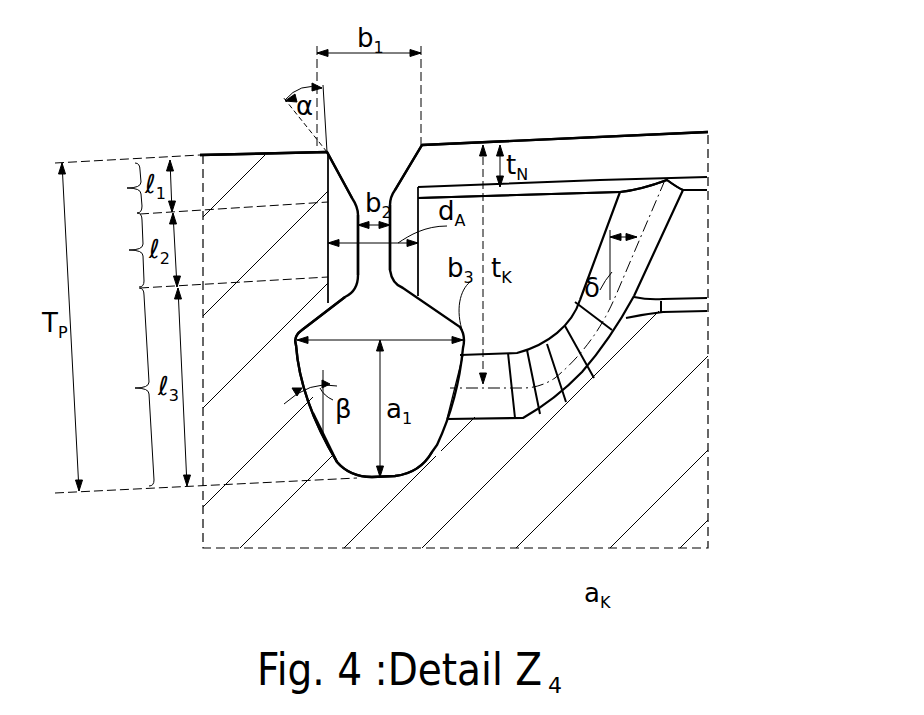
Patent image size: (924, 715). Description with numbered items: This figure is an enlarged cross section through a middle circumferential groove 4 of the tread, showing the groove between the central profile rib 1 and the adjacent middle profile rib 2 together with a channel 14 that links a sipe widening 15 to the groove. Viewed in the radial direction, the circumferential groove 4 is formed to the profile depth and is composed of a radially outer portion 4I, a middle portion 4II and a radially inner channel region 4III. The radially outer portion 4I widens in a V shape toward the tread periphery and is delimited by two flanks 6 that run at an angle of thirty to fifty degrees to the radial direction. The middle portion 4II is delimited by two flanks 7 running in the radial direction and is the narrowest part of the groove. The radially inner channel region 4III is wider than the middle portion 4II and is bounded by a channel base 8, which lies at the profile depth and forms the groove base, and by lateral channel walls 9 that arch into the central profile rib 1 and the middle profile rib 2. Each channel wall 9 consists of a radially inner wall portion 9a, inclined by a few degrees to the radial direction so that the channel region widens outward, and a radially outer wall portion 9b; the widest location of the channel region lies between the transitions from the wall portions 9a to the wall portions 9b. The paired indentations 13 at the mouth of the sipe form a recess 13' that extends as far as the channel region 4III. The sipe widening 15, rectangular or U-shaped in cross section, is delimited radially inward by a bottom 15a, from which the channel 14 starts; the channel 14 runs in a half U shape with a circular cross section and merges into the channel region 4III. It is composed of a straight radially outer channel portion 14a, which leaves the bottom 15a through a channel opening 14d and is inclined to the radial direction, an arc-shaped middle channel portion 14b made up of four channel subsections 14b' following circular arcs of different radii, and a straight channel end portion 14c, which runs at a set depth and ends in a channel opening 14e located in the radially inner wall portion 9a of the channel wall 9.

The central profile rib 1 is at (532, 211).
The middle profile rib 2 is at (263, 156).
The middle circumferential groove 4 is at (413, 93).
The radially outer portion 4I is at (127, 188).
The middle portion 4II is at (129, 250).
The radially inner channel region 4III is at (135, 388).
The flank 6 is at (345, 183).
The flank 7 is at (328, 233).
The channel base 8 is at (395, 478).
The channel wall 9 is at (324, 452).
The radially inner wall portion 9a is at (330, 443).
The radially outer wall portion 9b is at (320, 312).
The indentation 13 is at (454, 126).
The recess 13' is at (395, 196).
The channel 14 is at (646, 230).
The radially outer channel portion 14a is at (633, 274).
The middle channel portion 14b is at (578, 454).
The channel subsection 14b' is at (653, 381).
The channel end portion 14c is at (475, 415).
The channel opening 14d is at (640, 180).
The channel opening 14e is at (450, 398).
The sipe widening 15 is at (610, 146).
The bottom 15a is at (583, 193).